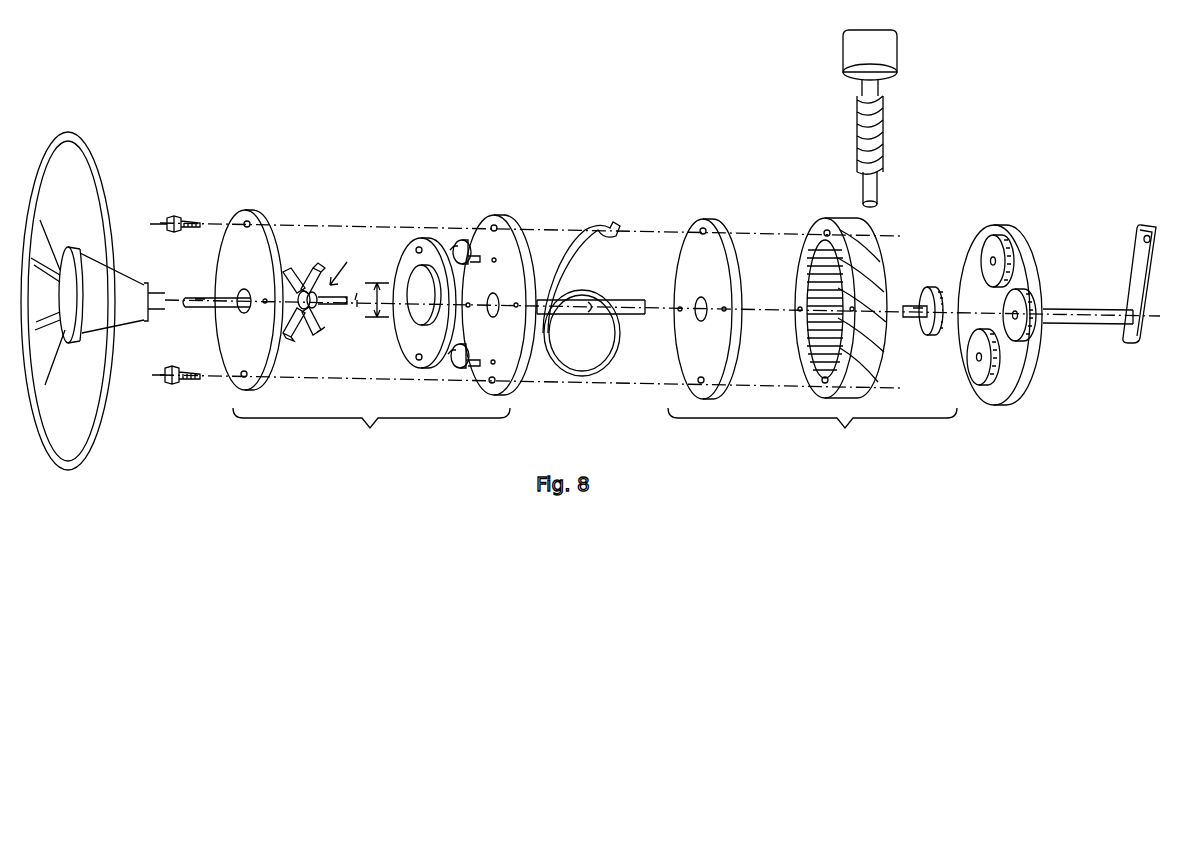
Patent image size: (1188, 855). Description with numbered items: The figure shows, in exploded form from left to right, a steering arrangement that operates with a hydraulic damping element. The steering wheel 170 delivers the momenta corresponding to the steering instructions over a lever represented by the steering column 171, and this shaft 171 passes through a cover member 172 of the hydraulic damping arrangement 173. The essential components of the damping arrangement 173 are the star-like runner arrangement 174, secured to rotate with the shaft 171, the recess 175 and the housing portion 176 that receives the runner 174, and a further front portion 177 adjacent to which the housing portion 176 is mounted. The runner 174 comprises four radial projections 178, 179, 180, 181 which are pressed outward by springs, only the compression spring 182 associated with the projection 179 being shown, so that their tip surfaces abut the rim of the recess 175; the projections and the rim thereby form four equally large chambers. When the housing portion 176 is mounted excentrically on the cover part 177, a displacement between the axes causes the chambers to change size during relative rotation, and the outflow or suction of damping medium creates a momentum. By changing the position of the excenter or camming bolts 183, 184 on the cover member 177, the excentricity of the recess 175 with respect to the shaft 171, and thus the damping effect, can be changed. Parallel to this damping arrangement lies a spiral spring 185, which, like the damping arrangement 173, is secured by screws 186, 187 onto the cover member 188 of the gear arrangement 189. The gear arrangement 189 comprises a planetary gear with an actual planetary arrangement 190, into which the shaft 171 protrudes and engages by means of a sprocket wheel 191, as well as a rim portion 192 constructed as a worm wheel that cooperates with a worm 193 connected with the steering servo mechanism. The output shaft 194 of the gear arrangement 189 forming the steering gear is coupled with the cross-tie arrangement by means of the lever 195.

The steering wheel 170 is at (87, 432).
The steering column 171 is at (197, 297).
The cover member 172 is at (240, 240).
The hydraulic damping arrangement 173 is at (371, 430).
The star-like runner arrangement 174 is at (359, 277).
The recess 175 is at (425, 283).
The housing portion 176 is at (412, 260).
The front portion 177 is at (506, 252).
The projection 178 is at (318, 328).
The projection 179 is at (325, 290).
The projection 180 is at (293, 283).
The projection 181 is at (297, 318).
The compression spring 182 is at (306, 283).
The excenter or camming bolt 183 is at (467, 243).
The excenter or camming bolt 184 is at (458, 363).
The spiral spring 185 is at (566, 250).
The screw 186 is at (186, 214).
The screw 187 is at (173, 384).
The cover member 188 is at (697, 245).
The gear arrangement 189 is at (812, 431).
The planetary arrangement 190 is at (975, 270).
The sprocket wheel 191 is at (928, 325).
The rim portion 192 is at (812, 256).
The worm 193 is at (878, 128).
The output shaft 194 is at (1083, 326).
The lever 195 is at (1139, 258).